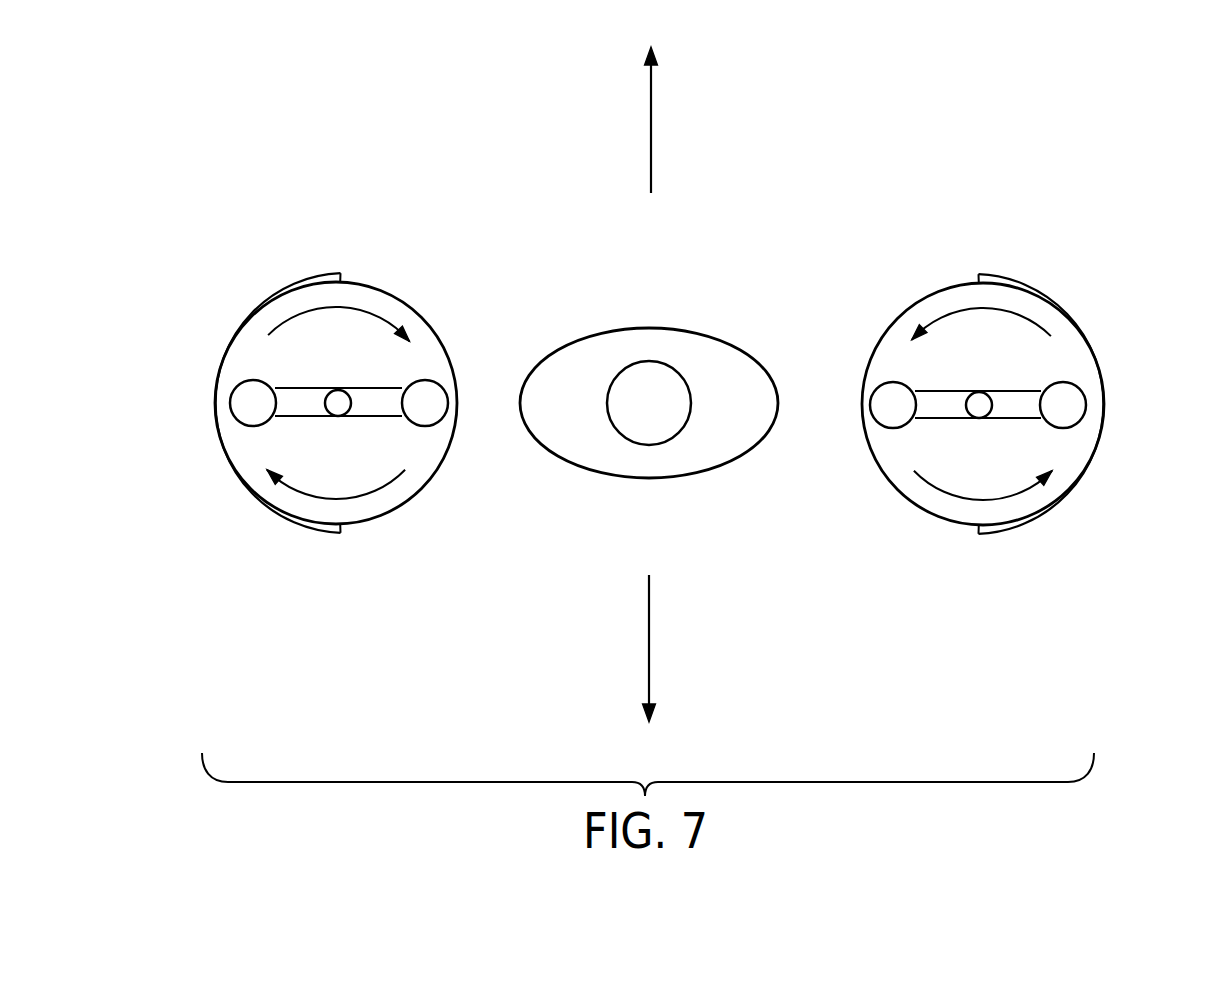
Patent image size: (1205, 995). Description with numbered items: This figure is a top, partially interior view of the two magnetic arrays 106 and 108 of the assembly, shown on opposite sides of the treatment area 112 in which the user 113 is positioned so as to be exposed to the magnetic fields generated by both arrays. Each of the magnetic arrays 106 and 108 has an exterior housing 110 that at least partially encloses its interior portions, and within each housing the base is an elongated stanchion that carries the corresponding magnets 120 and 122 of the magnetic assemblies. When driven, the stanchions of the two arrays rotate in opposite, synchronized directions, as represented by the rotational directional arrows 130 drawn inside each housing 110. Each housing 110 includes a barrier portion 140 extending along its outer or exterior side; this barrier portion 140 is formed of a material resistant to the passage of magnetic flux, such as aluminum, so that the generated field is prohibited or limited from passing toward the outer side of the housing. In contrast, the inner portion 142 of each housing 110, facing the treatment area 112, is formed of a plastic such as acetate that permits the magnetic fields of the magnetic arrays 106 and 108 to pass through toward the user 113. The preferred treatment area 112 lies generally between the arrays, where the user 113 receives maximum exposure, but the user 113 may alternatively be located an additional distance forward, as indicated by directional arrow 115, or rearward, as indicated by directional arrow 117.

The magnetic array 106 is at (1012, 338).
The magnetic array 108 is at (308, 337).
The exterior housing 110 is at (350, 545).
The treatment area 112 is at (671, 292).
The user 113 is at (649, 367).
The directional arrow 115 is at (650, 115).
The directional arrow 117 is at (649, 645).
The magnet 120 is at (1077, 384).
The magnet 122 is at (237, 383).
The rotational directional arrow 130 is at (368, 308).
The barrier portion 140 is at (277, 290).
The inner portion 142 is at (440, 326).